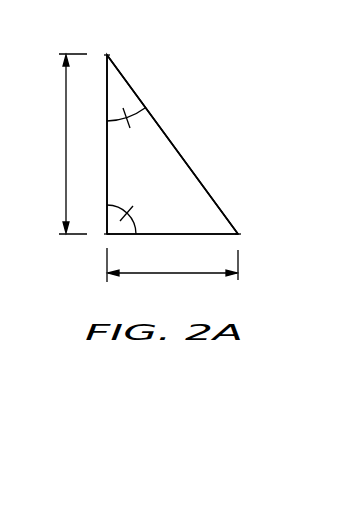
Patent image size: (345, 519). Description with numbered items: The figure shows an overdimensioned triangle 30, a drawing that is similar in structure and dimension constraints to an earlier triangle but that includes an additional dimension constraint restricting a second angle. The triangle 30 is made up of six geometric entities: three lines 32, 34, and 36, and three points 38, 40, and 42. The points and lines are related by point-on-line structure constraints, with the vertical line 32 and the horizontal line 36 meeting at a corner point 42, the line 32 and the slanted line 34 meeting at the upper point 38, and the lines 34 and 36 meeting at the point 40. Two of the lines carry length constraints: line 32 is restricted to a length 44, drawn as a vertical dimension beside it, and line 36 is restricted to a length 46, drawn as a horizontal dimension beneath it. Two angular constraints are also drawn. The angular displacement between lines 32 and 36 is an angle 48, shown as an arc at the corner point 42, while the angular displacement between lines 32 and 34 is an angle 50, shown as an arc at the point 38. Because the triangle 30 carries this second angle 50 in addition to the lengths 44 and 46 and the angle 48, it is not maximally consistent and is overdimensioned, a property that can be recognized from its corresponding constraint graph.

The overdimensioned triangle 30 is at (186, 101).
The line 32 is at (106, 130).
The line 34 is at (202, 183).
The line 36 is at (217, 237).
The point 38 is at (109, 54).
The point 40 is at (253, 235).
The point 42 is at (106, 238).
The length 44 is at (63, 133).
The length 46 is at (207, 274).
The angle 48 is at (135, 223).
The angle 50 is at (110, 123).